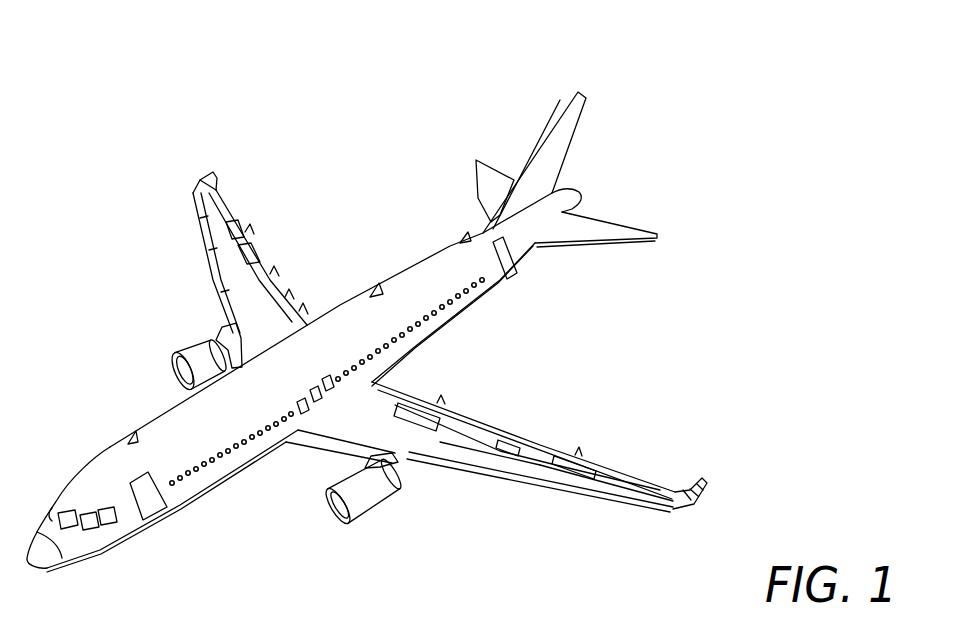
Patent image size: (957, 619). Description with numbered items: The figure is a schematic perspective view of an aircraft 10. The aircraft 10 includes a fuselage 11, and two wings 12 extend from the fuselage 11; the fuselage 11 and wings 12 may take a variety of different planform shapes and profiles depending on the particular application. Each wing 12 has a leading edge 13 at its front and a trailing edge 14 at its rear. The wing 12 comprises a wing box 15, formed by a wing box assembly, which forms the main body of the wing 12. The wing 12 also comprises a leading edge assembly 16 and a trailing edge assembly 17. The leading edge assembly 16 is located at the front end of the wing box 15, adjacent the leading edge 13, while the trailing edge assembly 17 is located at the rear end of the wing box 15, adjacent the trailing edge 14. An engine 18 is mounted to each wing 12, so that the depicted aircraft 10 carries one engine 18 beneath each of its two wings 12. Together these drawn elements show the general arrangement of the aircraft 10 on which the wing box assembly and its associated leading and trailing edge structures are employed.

The aircraft 10 is at (712, 102).
The fuselage 11 is at (413, 272).
The wing 12 is at (505, 446).
The leading edge 13 is at (557, 485).
The trailing edge 14 is at (597, 468).
The wing box 15 is at (478, 458).
The leading edge assembly 16 is at (607, 492).
The trailing edge assembly 17 is at (457, 428).
The engine 18 is at (372, 497).